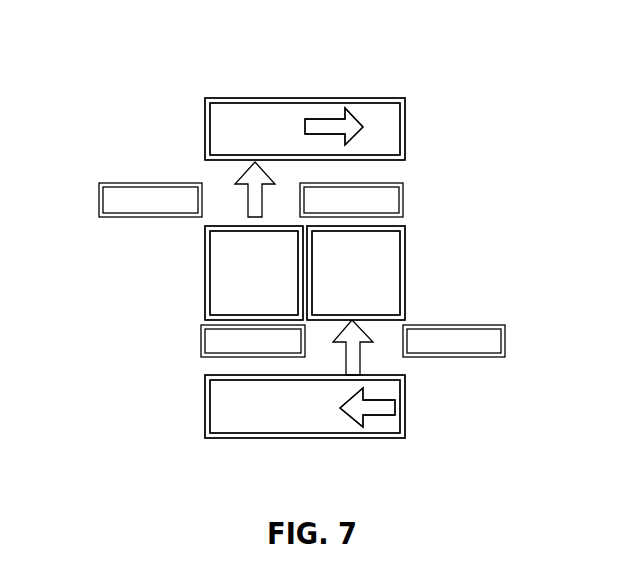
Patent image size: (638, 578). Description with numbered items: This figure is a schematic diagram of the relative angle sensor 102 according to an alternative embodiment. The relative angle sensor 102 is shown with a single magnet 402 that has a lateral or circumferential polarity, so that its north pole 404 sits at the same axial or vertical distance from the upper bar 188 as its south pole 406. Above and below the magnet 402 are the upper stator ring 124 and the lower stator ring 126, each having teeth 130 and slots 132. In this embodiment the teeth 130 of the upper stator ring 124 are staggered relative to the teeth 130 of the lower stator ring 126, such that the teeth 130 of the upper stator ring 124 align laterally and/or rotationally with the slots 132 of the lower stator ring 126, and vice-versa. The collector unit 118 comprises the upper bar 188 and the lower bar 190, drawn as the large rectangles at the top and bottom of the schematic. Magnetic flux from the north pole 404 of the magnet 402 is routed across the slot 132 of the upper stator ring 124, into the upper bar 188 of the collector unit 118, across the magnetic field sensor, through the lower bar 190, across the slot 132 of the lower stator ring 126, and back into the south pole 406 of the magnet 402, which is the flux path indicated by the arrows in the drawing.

The relative angle sensor 102 is at (118, 82).
The collector unit 118 is at (412, 90).
The upper stator ring 124 is at (94, 199).
The lower stator ring 126 is at (197, 338).
The teeth 130 is at (143, 198).
The slots 132 is at (221, 197).
The upper bar 188 is at (251, 125).
The lower bar 190 is at (295, 418).
The magnet 402 is at (222, 296).
The north pole 404 is at (228, 282).
The south pole 406 is at (385, 272).